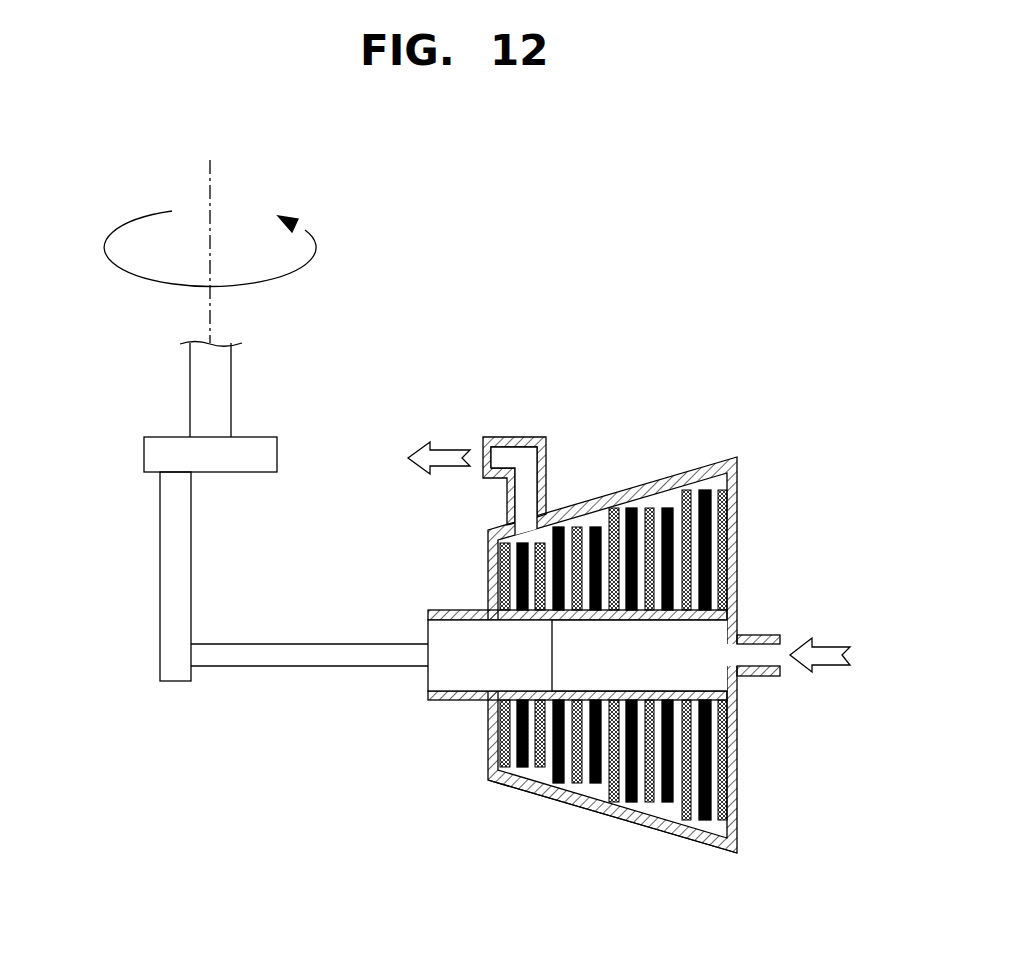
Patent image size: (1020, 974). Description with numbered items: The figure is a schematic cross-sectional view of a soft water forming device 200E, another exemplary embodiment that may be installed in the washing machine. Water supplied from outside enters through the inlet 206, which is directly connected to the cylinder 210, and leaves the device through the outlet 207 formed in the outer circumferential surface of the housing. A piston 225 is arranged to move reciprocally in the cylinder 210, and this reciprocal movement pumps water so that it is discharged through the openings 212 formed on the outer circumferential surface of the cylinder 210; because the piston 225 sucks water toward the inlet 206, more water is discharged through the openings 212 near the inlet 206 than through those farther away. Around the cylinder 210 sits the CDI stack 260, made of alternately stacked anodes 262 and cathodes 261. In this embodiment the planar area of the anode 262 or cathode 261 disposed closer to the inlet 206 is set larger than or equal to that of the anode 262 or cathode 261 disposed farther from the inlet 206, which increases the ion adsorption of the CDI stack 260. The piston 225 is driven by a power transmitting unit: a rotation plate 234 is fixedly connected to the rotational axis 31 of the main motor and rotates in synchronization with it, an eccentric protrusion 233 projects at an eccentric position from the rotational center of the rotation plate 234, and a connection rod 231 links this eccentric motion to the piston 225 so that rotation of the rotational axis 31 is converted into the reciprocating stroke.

The rotational axis 31 is at (200, 388).
The rotation plate 234 is at (157, 455).
The eccentric protrusion 233 is at (165, 581).
The connection rod 231 is at (277, 652).
The piston 225 is at (448, 643).
The outlet 207 is at (490, 453).
The soft water forming device 200E is at (624, 645).
The inlet 206 is at (772, 636).
The openings 212 is at (573, 621).
The cylinder 210 is at (710, 686).
The CDI stack 260 is at (648, 816).
The anode 262 is at (688, 828).
The cathode 261 is at (721, 850).